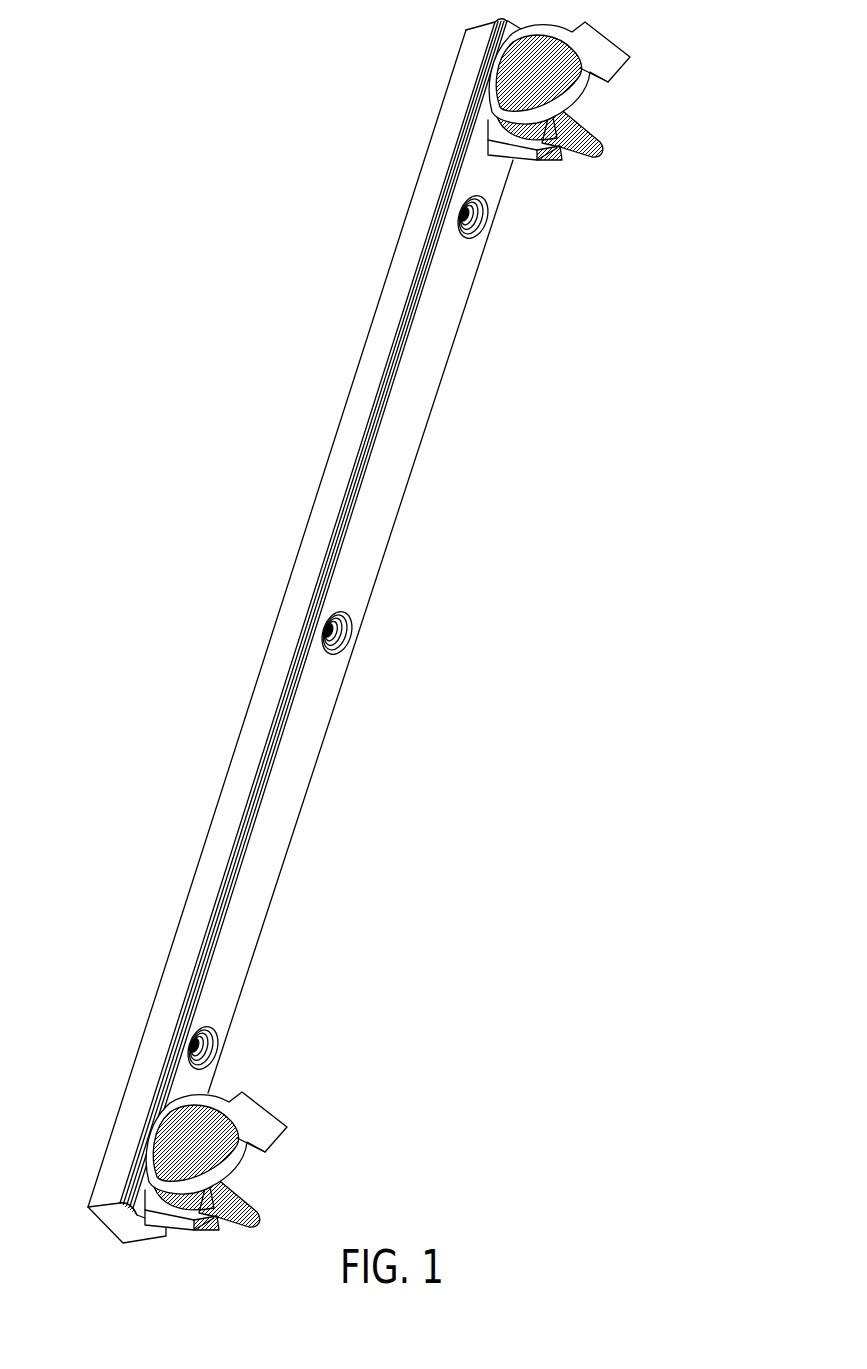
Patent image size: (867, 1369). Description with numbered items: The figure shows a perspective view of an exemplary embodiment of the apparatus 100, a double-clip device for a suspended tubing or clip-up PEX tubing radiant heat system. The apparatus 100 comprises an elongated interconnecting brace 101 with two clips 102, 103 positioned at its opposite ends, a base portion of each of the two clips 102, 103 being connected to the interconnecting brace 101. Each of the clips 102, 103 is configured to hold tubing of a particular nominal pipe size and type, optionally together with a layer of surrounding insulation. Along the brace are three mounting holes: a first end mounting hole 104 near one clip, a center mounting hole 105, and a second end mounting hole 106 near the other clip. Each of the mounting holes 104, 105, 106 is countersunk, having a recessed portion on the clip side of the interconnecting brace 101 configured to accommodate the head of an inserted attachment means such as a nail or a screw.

The apparatus 100 is at (196, 228).
The interconnecting brace 101 is at (367, 553).
The clip 102 is at (613, 63).
The clip 103 is at (267, 1133).
The first end mounting hole 104 is at (478, 223).
The center mounting hole 105 is at (343, 640).
The second end mounting hole 106 is at (208, 1050).